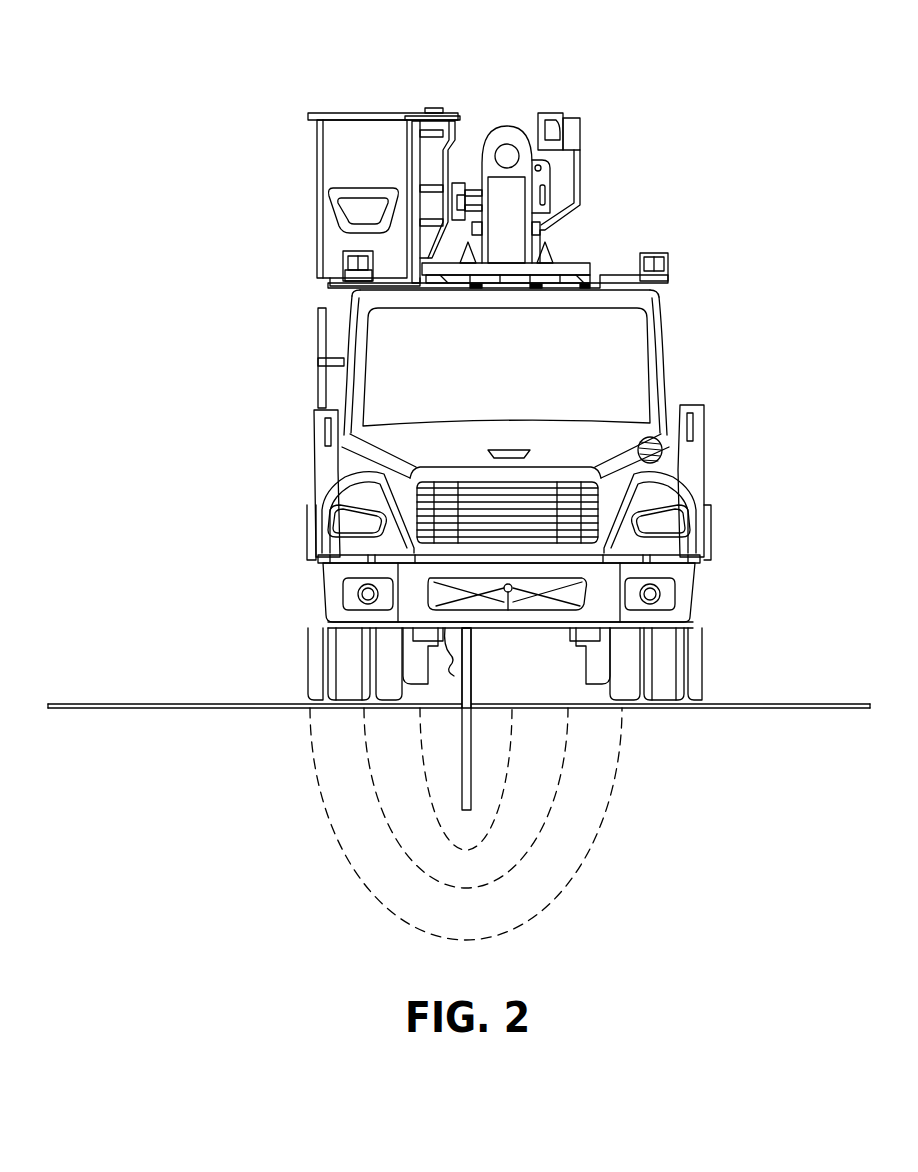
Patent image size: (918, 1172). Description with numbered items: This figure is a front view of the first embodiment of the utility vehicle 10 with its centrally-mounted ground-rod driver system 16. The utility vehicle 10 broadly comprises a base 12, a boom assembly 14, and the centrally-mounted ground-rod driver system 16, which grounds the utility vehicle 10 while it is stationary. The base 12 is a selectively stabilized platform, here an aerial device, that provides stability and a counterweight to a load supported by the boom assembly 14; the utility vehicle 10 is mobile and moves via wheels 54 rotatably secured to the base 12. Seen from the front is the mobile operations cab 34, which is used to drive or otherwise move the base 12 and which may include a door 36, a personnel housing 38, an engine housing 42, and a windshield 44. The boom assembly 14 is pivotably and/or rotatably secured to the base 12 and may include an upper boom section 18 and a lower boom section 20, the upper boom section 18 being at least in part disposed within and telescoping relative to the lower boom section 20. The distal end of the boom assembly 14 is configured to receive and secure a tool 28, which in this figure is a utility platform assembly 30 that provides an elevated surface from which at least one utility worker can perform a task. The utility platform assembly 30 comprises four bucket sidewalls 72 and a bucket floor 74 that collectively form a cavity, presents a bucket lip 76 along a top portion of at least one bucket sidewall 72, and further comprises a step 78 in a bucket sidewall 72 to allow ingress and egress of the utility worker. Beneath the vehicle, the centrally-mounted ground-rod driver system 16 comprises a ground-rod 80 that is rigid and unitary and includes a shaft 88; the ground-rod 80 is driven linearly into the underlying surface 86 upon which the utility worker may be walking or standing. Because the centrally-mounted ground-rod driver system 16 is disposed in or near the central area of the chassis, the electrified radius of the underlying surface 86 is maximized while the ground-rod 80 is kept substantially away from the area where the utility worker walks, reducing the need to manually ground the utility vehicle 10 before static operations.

The utility vehicle 10 is at (221, 29).
The base 12 is at (232, 481).
The boom assembly 14 is at (500, 188).
The centrally-mounted ground-rod driver system 16 is at (515, 676).
The upper boom section 18 is at (520, 243).
The lower boom section 20 is at (500, 156).
The tool 28 is at (322, 84).
The utility platform assembly 30 is at (346, 186).
The mobile operations cab 34 is at (508, 456).
The door 36 is at (343, 390).
The personnel housing 38 is at (657, 296).
The engine housing 42 is at (583, 433).
The windshield 44 is at (378, 373).
The wheels 54 is at (380, 658).
The bucket sidewalls 72 is at (337, 148).
The bucket floor 74 is at (336, 283).
The bucket lip 76 is at (365, 115).
The step 78 is at (345, 206).
The ground-rod 80 is at (472, 658).
The underlying surface 86 is at (790, 702).
The shaft 88 is at (471, 755).